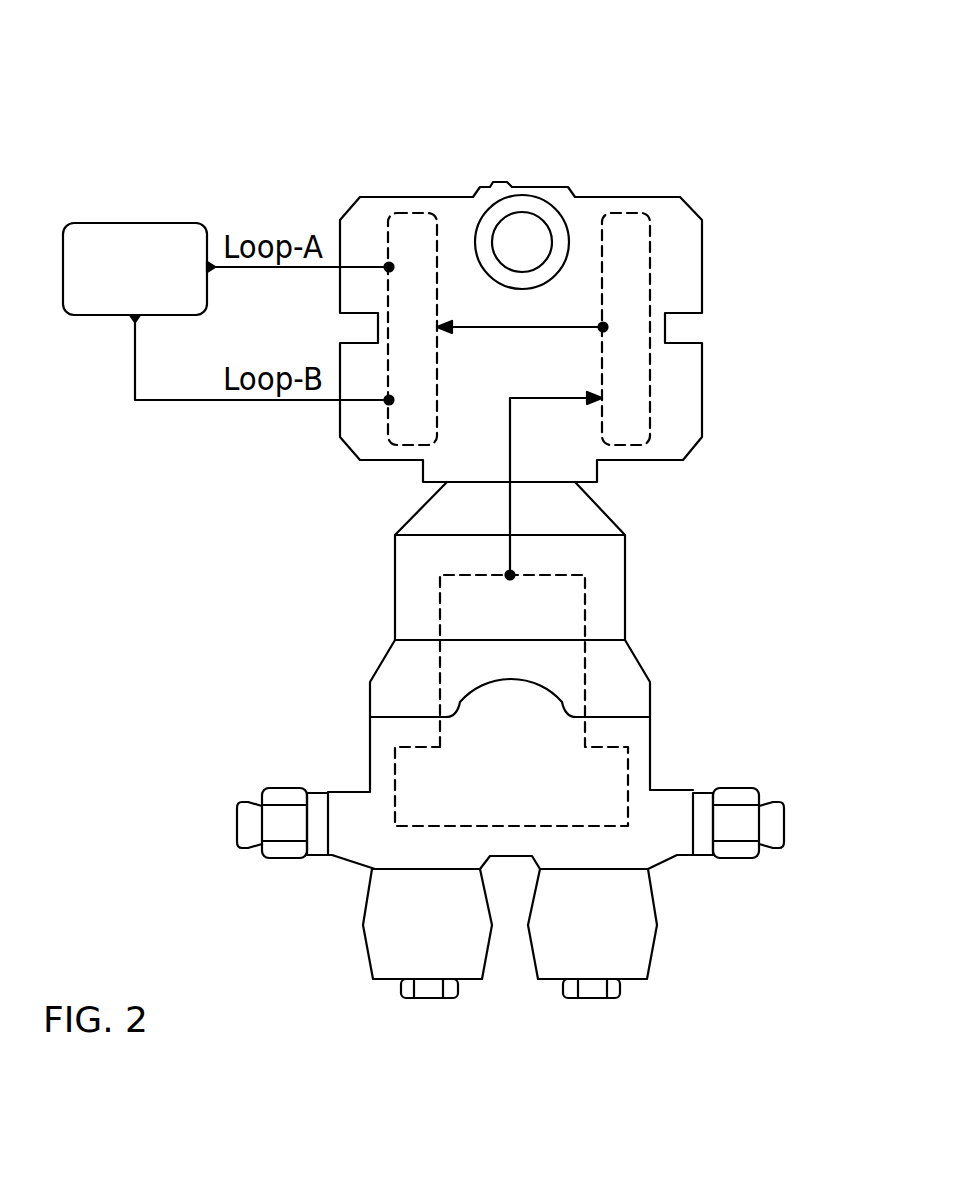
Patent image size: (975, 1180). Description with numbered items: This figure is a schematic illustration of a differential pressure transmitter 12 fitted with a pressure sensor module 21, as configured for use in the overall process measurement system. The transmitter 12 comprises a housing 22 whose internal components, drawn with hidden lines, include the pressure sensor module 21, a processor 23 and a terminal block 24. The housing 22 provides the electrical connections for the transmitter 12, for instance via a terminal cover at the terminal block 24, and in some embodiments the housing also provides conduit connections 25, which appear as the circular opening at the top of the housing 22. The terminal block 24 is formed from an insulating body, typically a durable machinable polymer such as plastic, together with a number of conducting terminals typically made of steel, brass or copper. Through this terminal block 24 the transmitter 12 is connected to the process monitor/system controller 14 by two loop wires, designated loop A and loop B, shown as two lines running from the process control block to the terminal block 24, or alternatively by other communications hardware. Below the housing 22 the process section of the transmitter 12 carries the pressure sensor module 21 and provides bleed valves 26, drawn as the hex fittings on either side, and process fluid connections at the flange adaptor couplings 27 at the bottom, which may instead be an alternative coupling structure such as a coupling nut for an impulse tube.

The differential pressure transmitter 12 is at (525, 507).
The process monitor/system controller 14 is at (64, 227).
The pressure sensor module 21 is at (440, 678).
The housing 22 is at (385, 197).
The processor 23 is at (655, 268).
The terminal block 24 is at (422, 225).
The conduit connections 25 is at (538, 196).
The bleed valves 26 is at (236, 846).
The flange adaptor couplings 27 is at (408, 946).